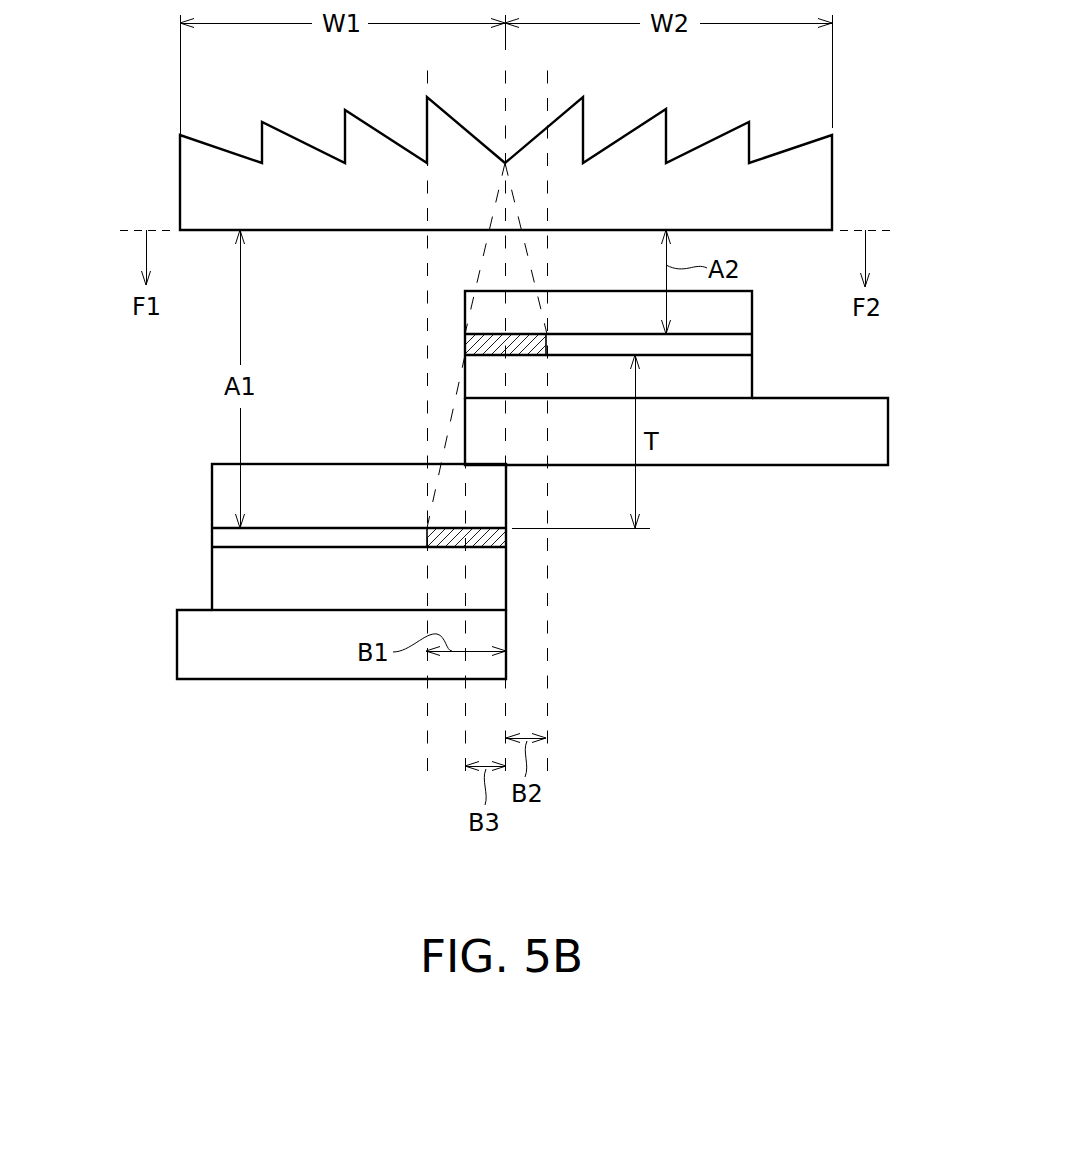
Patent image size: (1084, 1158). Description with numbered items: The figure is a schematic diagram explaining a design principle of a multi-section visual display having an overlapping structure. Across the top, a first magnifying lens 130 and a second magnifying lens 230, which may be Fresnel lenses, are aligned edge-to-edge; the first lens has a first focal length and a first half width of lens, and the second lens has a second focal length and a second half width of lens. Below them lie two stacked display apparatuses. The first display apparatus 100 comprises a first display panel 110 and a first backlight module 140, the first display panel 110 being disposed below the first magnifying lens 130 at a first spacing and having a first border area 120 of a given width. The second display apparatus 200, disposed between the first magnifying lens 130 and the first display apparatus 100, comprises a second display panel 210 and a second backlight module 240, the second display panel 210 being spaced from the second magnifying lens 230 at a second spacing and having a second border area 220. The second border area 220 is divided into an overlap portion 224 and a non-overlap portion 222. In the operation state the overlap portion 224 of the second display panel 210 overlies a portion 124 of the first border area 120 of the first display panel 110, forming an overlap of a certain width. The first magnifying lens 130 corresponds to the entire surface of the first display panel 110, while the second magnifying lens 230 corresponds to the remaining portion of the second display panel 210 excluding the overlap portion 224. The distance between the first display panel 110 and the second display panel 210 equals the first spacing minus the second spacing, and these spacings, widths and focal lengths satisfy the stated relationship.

The first display apparatus 100 is at (348, 543).
The first display panel 110 is at (220, 537).
The first border area 120 is at (489, 511).
The portion of the first border area 124 is at (480, 535).
The first magnifying lens 130 is at (311, 208).
The first backlight module 140 is at (311, 658).
The second display apparatus 200 is at (600, 370).
The second display panel 210 is at (738, 345).
The second border area 220 is at (507, 330).
The non-overlap portion 222 is at (526, 333).
The overlap portion 224 is at (465, 345).
The second magnifying lens 230 is at (711, 208).
The second backlight module 240 is at (755, 448).